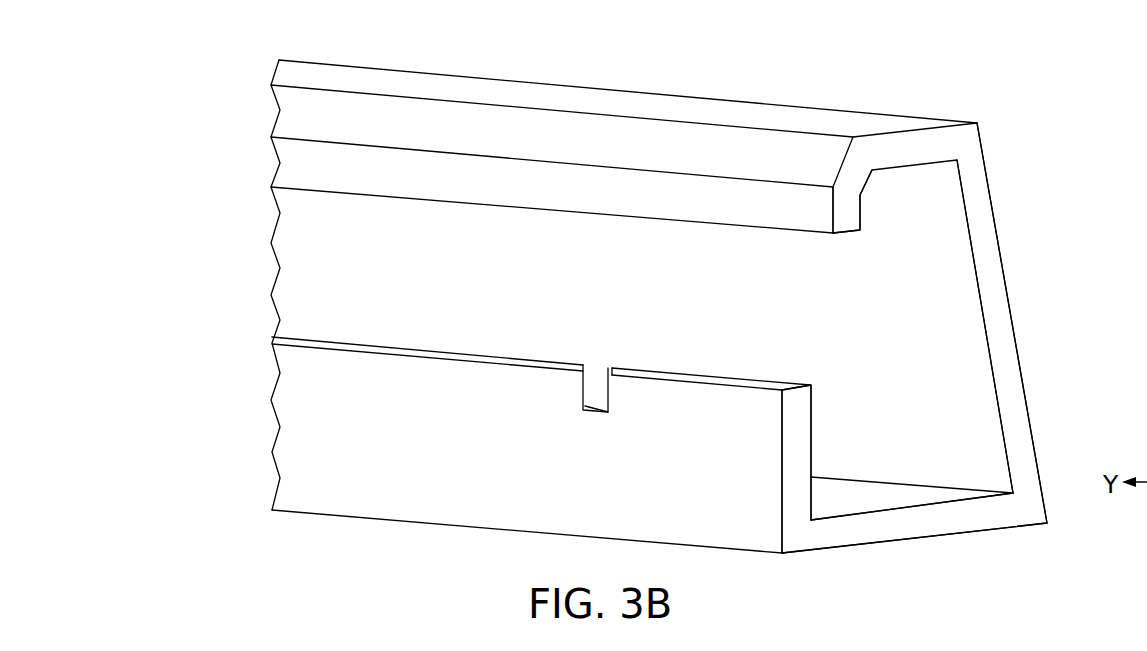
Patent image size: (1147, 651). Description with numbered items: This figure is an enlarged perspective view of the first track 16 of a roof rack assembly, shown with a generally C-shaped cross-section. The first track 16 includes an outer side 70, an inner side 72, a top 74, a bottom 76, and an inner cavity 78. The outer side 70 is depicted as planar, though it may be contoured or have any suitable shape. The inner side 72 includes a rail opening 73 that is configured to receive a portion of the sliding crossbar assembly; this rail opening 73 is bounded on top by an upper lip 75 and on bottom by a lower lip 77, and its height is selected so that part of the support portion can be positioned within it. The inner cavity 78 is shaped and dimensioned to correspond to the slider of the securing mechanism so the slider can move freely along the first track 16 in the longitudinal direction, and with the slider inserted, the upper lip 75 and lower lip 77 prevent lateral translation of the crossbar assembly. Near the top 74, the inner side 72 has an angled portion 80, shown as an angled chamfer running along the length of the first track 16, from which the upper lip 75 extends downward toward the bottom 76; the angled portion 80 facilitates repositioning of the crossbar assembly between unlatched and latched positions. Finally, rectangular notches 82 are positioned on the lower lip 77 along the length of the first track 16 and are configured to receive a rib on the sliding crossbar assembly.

The first track 16 is at (632, 88).
The outer side 70 is at (1028, 233).
The inner side 72 is at (320, 417).
The rail opening 73 is at (320, 257).
The top 74 is at (397, 78).
The upper lip 75 is at (808, 223).
The bottom 76 is at (913, 542).
The lower lip 77 is at (763, 435).
The inner cavity 78 is at (960, 322).
The angled portion 80 is at (287, 125).
The notches 82 is at (583, 398).